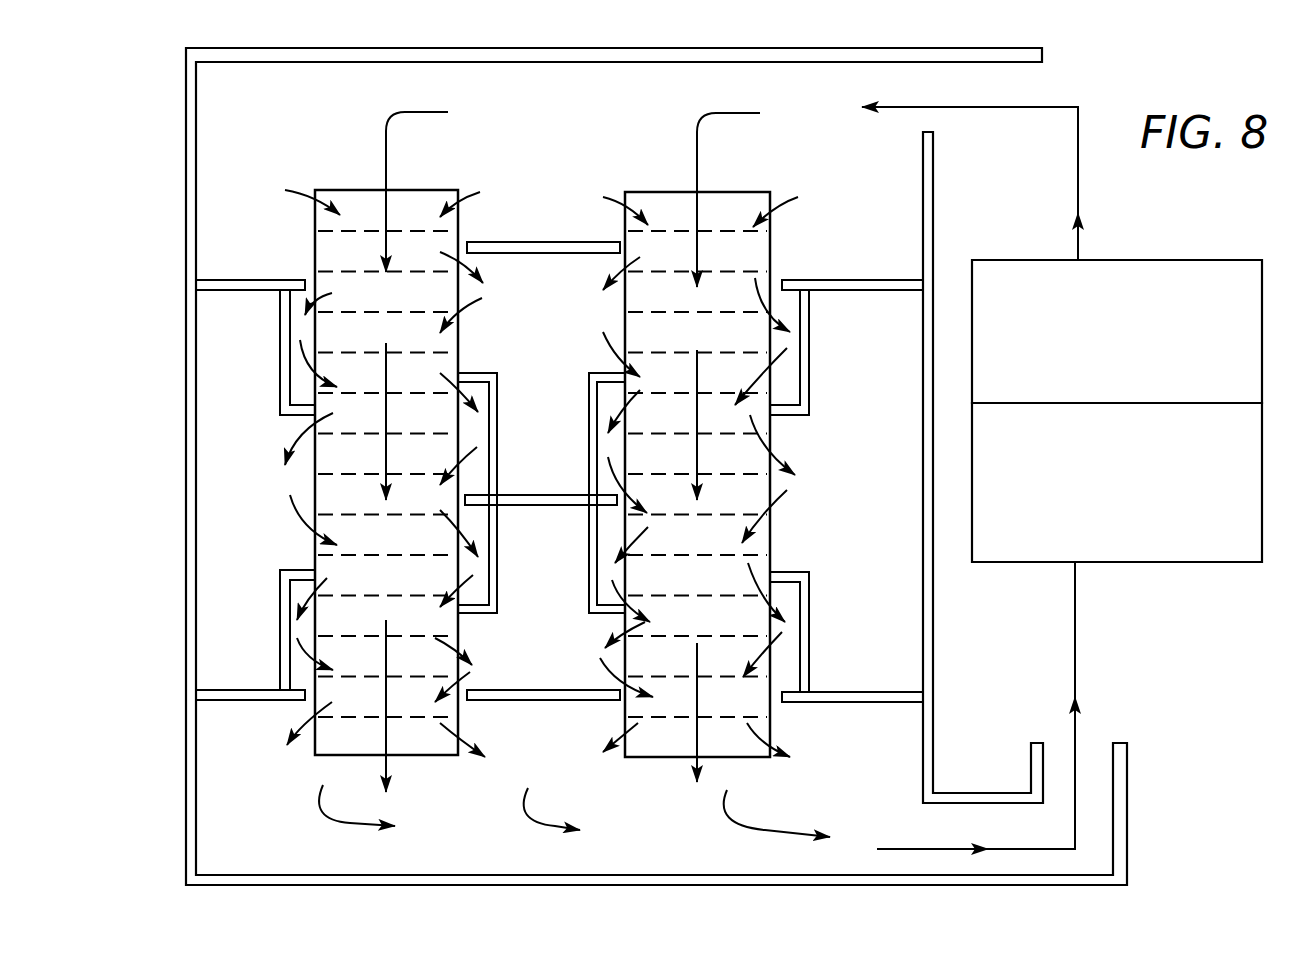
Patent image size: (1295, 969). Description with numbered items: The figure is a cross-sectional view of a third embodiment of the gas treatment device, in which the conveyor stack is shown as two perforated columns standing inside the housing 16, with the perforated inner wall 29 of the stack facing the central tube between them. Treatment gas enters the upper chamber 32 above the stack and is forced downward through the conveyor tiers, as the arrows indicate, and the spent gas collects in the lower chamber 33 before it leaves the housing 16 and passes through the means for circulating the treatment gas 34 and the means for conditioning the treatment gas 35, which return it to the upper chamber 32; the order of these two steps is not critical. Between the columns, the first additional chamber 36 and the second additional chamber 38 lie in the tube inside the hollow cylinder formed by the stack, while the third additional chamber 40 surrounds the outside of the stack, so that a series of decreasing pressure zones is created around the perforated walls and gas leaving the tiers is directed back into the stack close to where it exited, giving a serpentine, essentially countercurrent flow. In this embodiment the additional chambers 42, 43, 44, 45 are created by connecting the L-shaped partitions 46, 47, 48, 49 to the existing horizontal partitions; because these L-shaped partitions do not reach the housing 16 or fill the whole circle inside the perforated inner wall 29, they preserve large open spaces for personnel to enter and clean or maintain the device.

The housing 16 is at (186, 212).
The perforated inner wall 29 is at (462, 222).
The upper chamber 32 is at (580, 121).
The lower chamber 33 is at (560, 742).
The means for circulating the treatment gas 34 is at (1135, 494).
The means for conditioning the treatment gas 35 is at (1128, 357).
The first additional chamber 36 is at (567, 321).
The second additional chamber 38 is at (560, 596).
The third additional chamber 40 is at (262, 484).
The additional chamber 42 is at (300, 330).
The additional chamber 43 is at (297, 627).
The additional chamber 44 is at (597, 385).
The additional chamber 45 is at (604, 540).
The L-shaped partition 46 is at (290, 370).
The L-shaped partition 47 is at (280, 567).
The L-shaped partition 48 is at (589, 473).
The L-shaped partition 49 is at (597, 613).